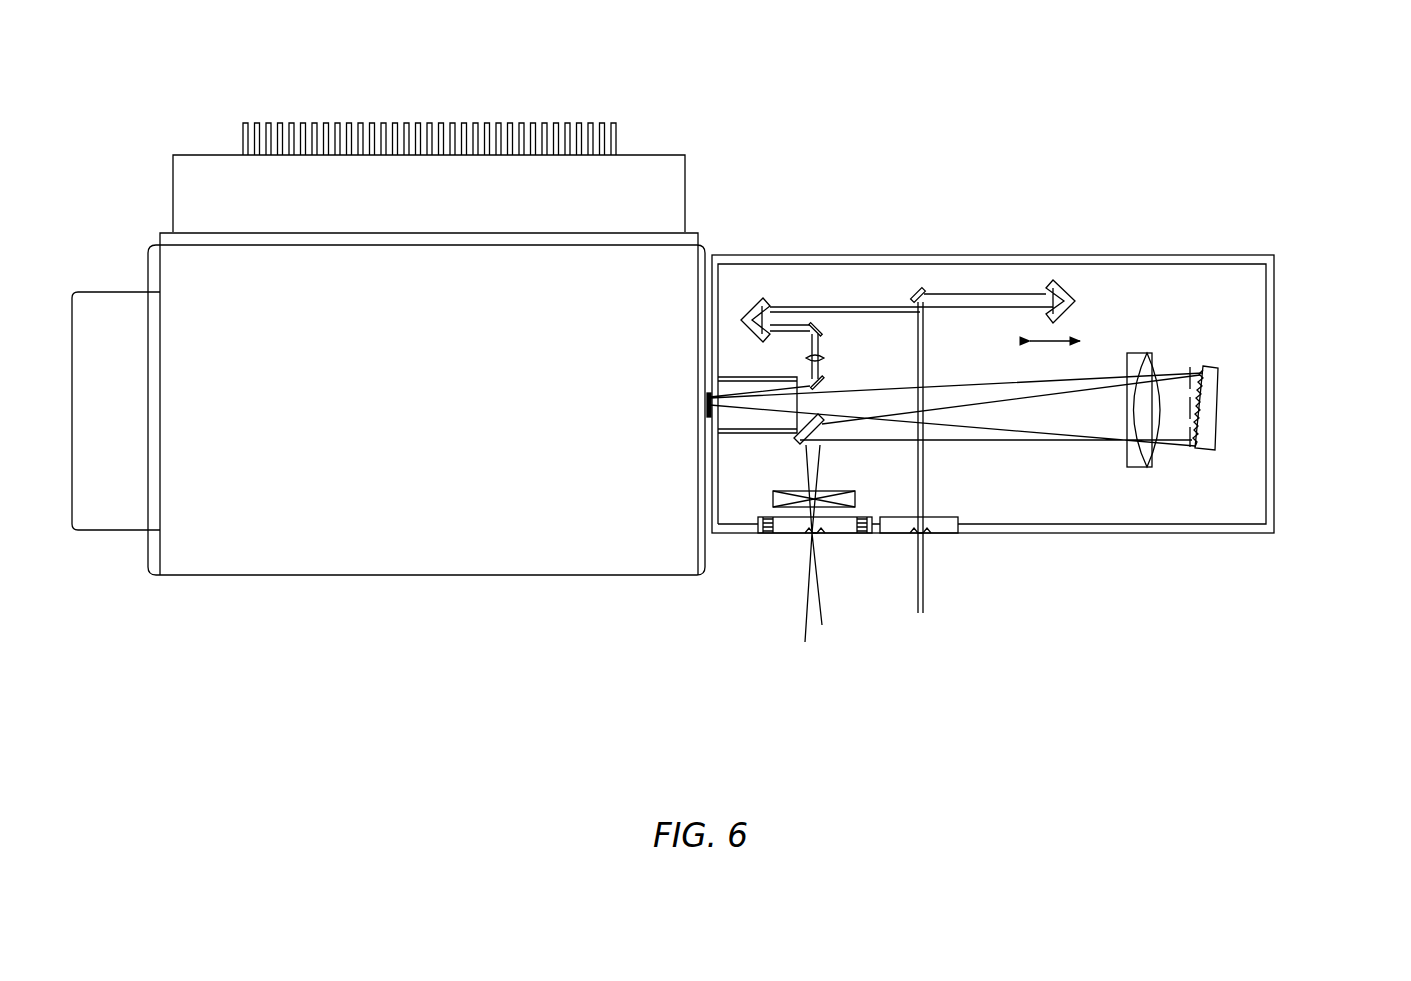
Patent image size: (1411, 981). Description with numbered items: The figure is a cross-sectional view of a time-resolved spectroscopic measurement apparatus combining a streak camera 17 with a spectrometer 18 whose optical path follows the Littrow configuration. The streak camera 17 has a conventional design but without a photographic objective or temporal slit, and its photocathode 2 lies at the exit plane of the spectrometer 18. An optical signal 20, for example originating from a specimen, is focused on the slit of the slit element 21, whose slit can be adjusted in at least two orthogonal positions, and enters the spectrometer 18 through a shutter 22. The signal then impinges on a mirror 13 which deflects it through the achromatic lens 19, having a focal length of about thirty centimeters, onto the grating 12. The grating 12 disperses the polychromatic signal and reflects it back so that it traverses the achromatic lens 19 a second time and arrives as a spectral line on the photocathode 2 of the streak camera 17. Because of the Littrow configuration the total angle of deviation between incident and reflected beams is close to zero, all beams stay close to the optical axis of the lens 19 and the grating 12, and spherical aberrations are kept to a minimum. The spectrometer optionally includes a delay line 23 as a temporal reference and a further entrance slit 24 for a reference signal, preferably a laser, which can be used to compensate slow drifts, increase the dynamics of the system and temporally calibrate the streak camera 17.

The photocathode 2 is at (697, 403).
The reflective grating 12 is at (1225, 412).
The mirror 13 is at (827, 410).
The streak camera 17 is at (642, 130).
The spectrometer 18 is at (1212, 228).
The achromatic lens 19 is at (1140, 480).
The optical signal 20 is at (800, 643).
The slit element 21 is at (822, 542).
The shutter 22 is at (767, 508).
The delay line 23 is at (838, 283).
The slit 24 is at (930, 543).